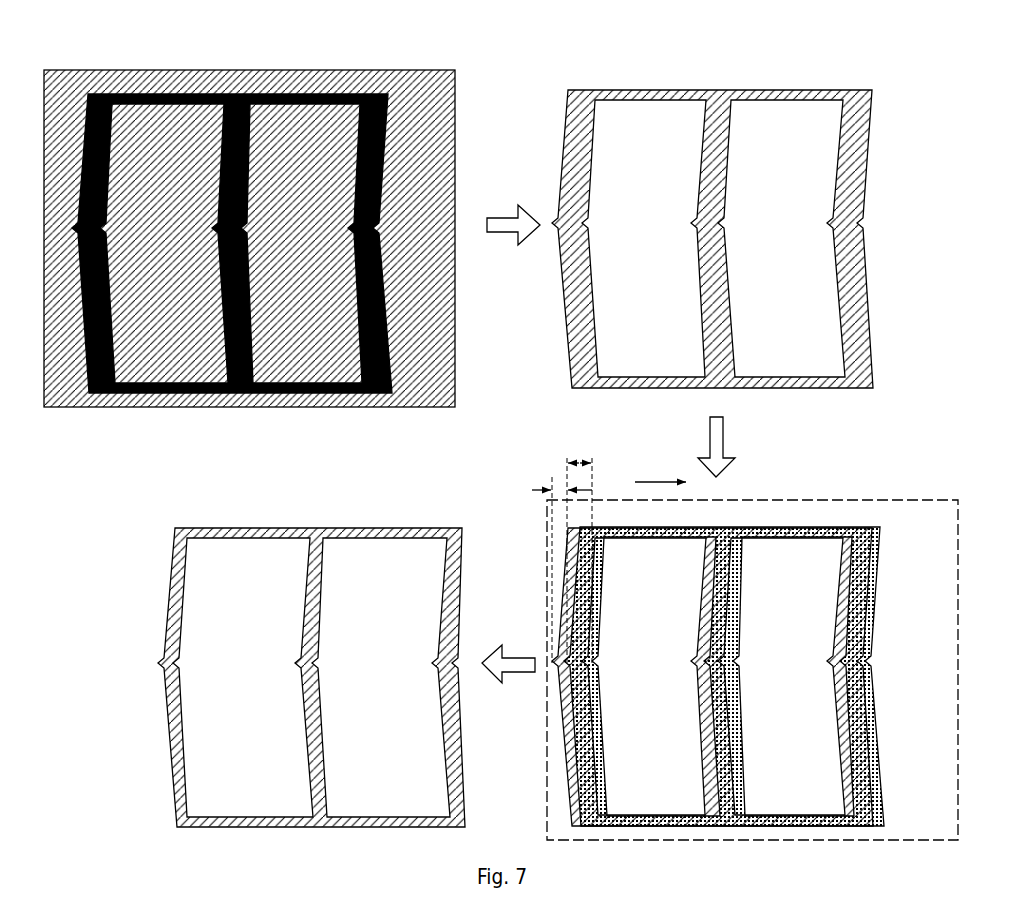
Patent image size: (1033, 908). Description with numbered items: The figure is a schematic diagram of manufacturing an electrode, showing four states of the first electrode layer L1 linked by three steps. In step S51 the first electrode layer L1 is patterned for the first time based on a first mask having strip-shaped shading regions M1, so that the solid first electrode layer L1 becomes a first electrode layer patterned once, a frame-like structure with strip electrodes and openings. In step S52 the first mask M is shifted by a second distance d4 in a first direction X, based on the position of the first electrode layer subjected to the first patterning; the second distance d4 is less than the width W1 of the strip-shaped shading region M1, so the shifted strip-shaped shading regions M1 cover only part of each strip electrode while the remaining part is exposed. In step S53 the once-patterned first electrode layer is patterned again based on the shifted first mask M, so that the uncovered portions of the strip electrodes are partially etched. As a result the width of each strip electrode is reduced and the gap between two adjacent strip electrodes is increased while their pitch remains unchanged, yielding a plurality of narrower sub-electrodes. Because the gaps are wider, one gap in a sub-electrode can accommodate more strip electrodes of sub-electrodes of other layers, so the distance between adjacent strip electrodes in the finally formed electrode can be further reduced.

The strip-shaped shading region M1 is at (306, 91).
The first electrode layer L1 is at (388, 69).
The first mask M is at (818, 499).
The step of patterning the first electrode layer for the first time S51 is at (513, 211).
The step of shifting the first mask S52 is at (735, 447).
The step of patterning the first electrode layer again S53 is at (508, 650).
The width of the strip-shaped shading region W1 is at (581, 552).
The second distance d4 is at (562, 566).
The first direction X is at (660, 469).